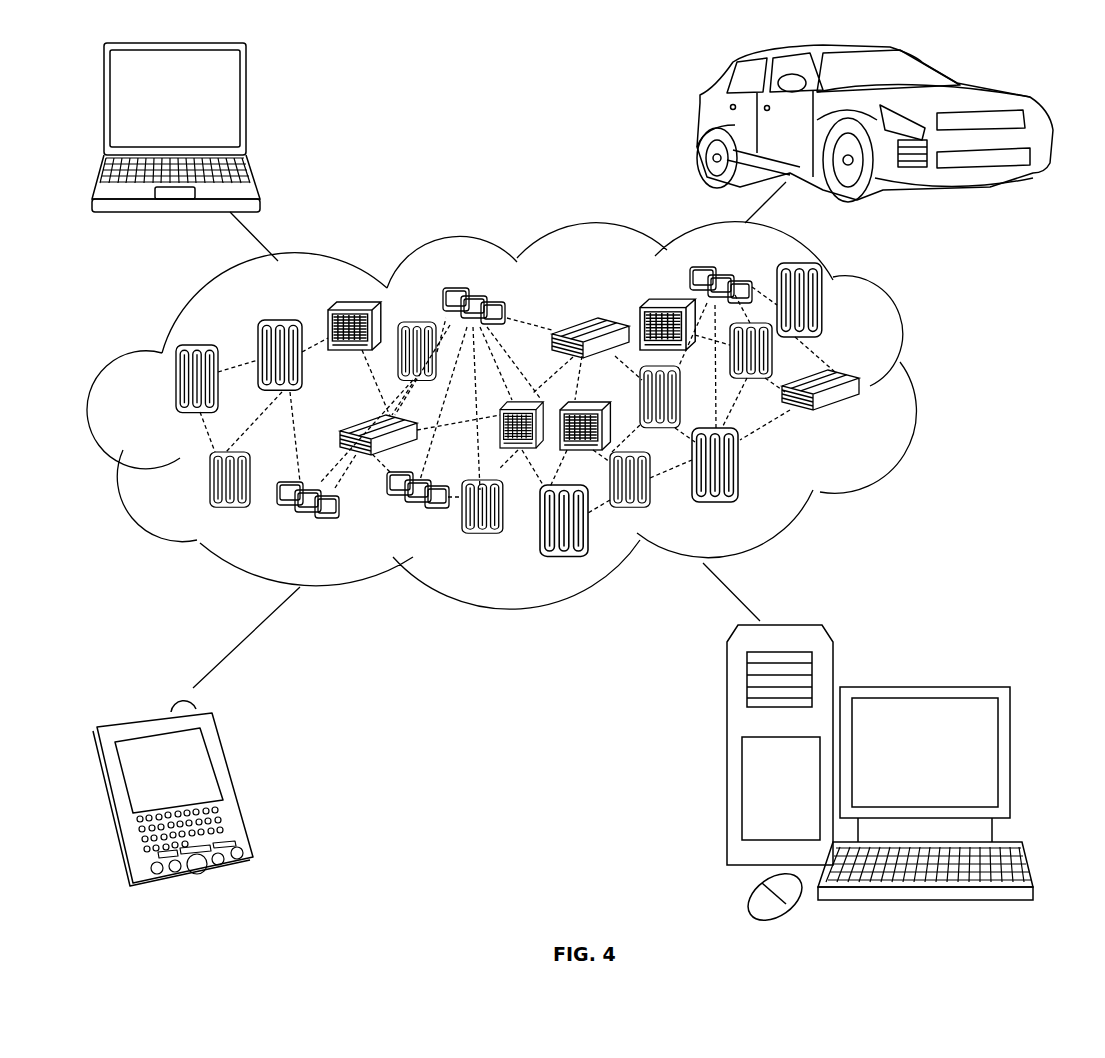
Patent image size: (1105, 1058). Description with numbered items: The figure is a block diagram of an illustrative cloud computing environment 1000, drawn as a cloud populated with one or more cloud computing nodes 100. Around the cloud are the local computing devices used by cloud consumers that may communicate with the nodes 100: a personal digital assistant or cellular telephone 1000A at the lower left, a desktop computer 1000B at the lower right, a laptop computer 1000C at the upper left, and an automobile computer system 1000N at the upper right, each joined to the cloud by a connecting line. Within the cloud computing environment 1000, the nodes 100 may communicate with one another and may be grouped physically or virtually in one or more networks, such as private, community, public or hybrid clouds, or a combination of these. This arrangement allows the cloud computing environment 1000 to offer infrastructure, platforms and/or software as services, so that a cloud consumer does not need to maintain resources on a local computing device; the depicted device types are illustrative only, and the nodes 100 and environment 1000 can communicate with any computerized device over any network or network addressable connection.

The cloud computing environment 1000 is at (923, 388).
The cloud computing nodes 100 is at (863, 420).
The personal digital assistant (PDA) or cellular telephone 1000A is at (237, 782).
The desktop computer 1000B is at (935, 660).
The laptop computer 1000C is at (245, 108).
The automobile computer system 1000N is at (697, 122).